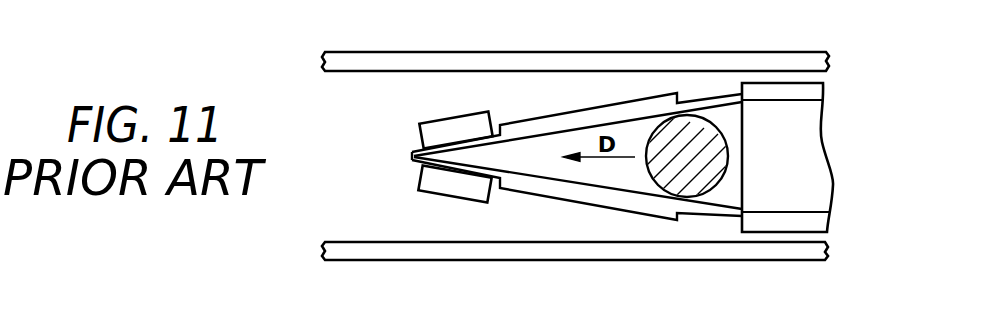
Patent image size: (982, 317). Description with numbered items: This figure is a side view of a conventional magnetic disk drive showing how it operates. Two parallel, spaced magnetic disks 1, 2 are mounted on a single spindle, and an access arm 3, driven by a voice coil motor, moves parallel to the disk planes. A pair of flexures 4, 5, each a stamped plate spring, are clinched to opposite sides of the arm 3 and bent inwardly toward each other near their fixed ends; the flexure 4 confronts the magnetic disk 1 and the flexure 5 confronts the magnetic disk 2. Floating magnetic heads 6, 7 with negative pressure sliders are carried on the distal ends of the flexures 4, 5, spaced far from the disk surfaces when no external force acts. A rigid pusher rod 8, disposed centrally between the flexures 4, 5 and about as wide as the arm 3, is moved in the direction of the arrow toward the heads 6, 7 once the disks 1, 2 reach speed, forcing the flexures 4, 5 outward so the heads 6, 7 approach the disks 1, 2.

The magnetic disk 1 is at (707, 57).
The magnetic disk 2 is at (728, 252).
The access arm 3 is at (822, 143).
The flexure 4 is at (585, 117).
The flexure 5 is at (574, 214).
The floating magnetic head 6 is at (462, 120).
The floating magnetic head 7 is at (465, 196).
The pusher rod 8 is at (670, 190).